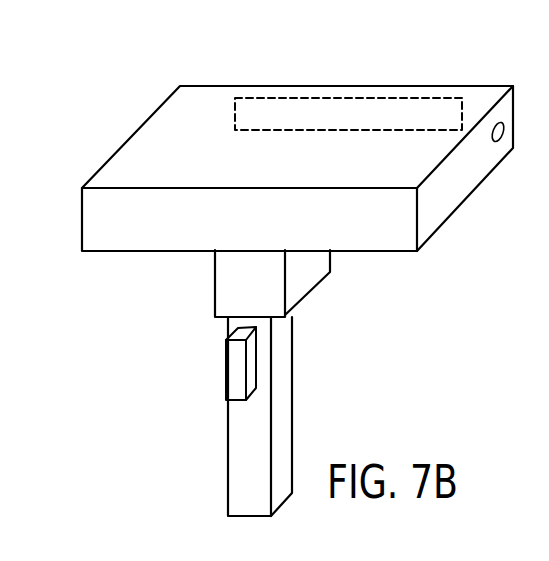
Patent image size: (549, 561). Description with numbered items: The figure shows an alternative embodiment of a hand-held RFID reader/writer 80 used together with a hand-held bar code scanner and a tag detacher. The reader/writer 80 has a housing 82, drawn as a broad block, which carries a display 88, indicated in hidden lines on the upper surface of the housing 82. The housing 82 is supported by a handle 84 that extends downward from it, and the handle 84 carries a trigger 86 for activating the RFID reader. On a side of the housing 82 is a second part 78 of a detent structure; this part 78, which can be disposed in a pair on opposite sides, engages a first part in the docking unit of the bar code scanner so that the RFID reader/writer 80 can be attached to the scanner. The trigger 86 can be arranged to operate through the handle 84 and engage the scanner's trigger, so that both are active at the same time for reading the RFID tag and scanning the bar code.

The second part of detent structure 78 is at (495, 143).
The hand-held RFID reader/writer 80 is at (303, 270).
The housing 82 is at (111, 158).
The handle 84 is at (293, 393).
The trigger 86 is at (232, 373).
The display 88 is at (300, 78).